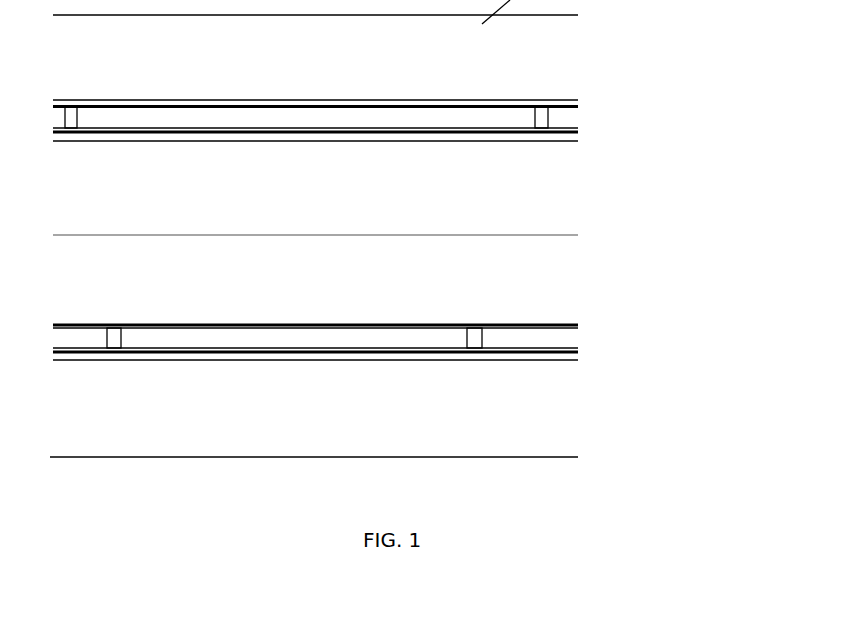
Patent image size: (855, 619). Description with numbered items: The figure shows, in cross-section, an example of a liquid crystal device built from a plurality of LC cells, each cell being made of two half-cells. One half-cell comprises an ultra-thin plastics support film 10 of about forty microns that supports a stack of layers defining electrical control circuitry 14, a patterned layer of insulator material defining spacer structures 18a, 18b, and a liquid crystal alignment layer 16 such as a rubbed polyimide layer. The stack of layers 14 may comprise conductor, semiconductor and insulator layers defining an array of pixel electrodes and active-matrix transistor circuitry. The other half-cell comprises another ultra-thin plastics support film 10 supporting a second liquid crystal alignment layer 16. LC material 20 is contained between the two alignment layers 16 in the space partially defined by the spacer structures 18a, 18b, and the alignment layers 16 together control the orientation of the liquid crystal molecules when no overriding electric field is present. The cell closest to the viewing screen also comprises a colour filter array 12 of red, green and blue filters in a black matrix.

The plastics support film 10 is at (558, 197).
The colour filter array 12 is at (517, 98).
The stack of layers defining electrical control circuitry 14 is at (402, 140).
The liquid crystal alignment layer 16 is at (577, 106).
The spacer structure 18a is at (540, 117).
The spacer structure 18b is at (482, 339).
The LC material 20 is at (315, 118).